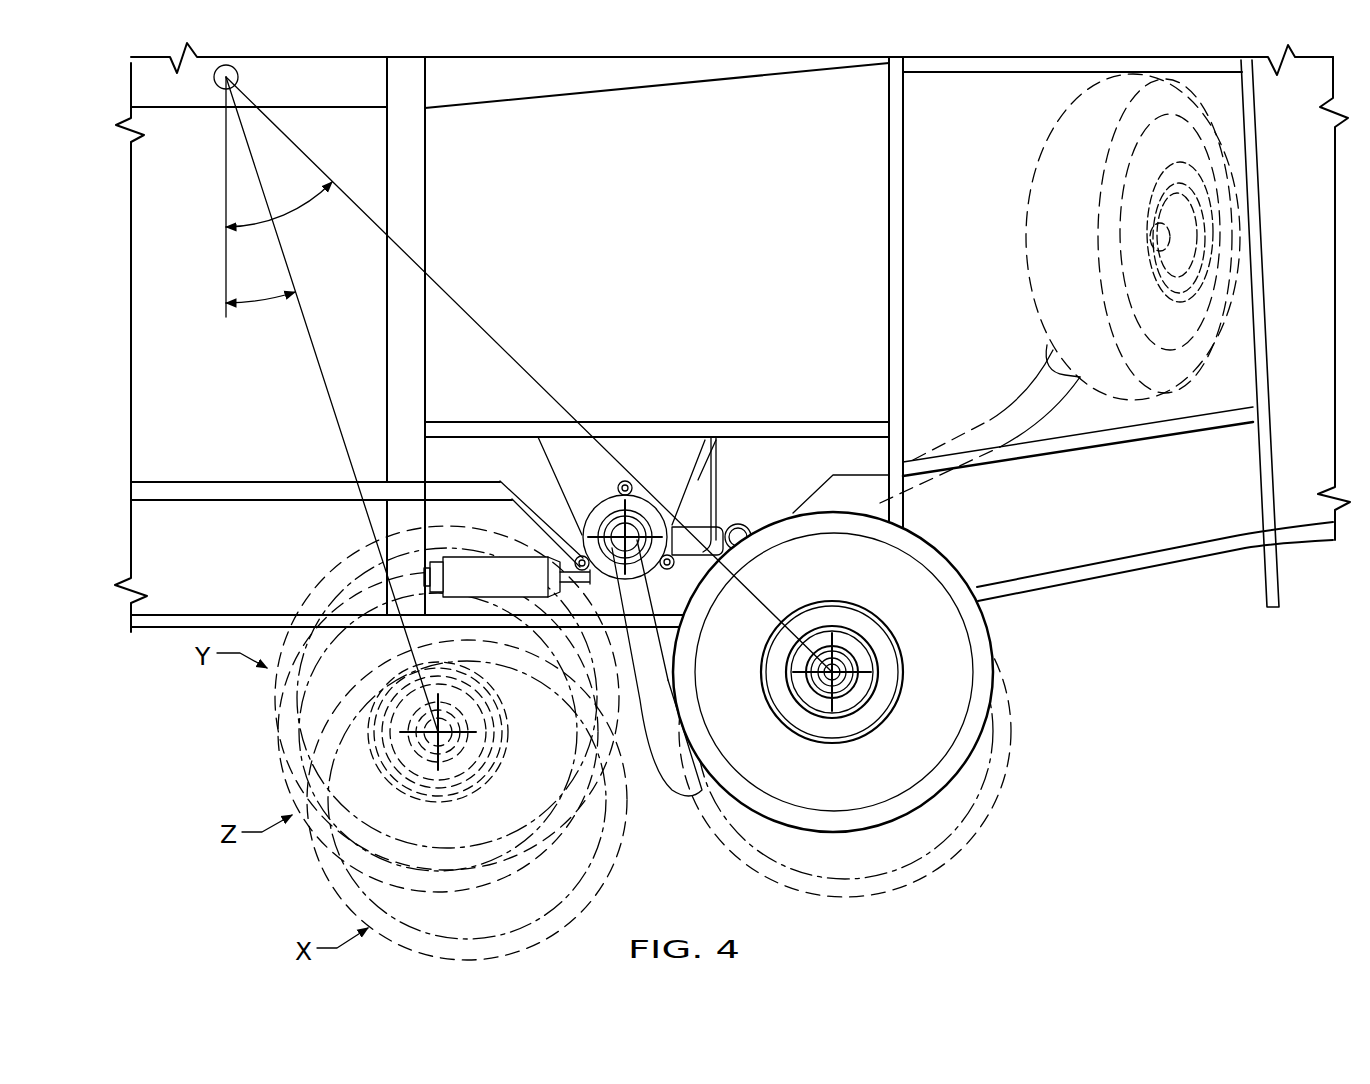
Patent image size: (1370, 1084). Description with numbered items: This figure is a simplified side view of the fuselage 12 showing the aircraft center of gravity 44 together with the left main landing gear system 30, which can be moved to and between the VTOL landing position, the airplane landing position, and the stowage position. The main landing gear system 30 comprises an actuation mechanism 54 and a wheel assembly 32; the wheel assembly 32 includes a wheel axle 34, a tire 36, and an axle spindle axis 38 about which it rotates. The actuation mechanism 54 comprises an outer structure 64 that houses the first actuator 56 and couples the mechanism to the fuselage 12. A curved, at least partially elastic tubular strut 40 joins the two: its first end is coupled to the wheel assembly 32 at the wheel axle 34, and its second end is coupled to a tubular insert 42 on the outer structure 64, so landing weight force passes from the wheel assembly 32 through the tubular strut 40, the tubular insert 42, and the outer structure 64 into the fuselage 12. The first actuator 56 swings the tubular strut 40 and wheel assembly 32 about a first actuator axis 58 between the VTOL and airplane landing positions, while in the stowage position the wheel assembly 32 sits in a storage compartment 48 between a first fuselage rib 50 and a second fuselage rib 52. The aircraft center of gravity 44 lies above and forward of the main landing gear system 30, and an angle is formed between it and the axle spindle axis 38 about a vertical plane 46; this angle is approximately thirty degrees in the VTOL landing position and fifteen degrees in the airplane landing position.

The fuselage 12 is at (152, 549).
The main landing gear system 30 is at (885, 704).
The wheel assembly 32 is at (1025, 682).
The wheel axle 34 is at (863, 712).
The tire 36 is at (993, 653).
The axle spindle axis 38 is at (813, 680).
The tubular strut 40 is at (863, 672).
The tubular insert 42 is at (607, 507).
The aircraft center of gravity 44 is at (216, 80).
The vertical plane 46 is at (226, 262).
The storage compartment 48 is at (930, 183).
The first fuselage rib 50 is at (886, 140).
The second fuselage rib 52 is at (1262, 155).
The actuation mechanism 54 is at (940, 507).
The first actuator 56 is at (587, 593).
The first actuator axis 58 is at (641, 515).
The outer structure 64 is at (762, 432).